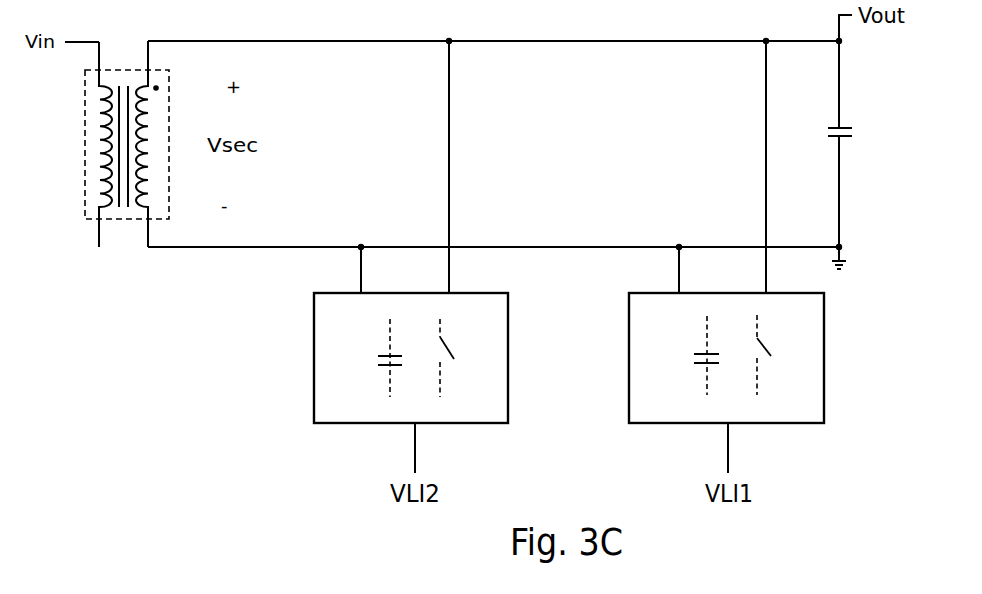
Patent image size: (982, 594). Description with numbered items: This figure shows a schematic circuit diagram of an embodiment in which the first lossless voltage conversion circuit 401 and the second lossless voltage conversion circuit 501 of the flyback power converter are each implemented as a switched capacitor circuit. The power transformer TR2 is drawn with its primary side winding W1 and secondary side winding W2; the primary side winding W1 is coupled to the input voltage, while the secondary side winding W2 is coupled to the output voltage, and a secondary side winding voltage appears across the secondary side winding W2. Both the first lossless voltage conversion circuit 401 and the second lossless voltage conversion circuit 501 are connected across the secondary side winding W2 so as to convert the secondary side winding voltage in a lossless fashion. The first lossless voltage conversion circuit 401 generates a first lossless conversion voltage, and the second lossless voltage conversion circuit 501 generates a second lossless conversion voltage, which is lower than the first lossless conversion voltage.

The second lossless voltage conversion circuit 501 is at (365, 412).
The first lossless voltage conversion circuit 401 is at (679, 412).
The power transformer TR2 is at (119, 144).
The primary side winding W1 is at (78, 144).
The secondary side winding W2 is at (174, 144).